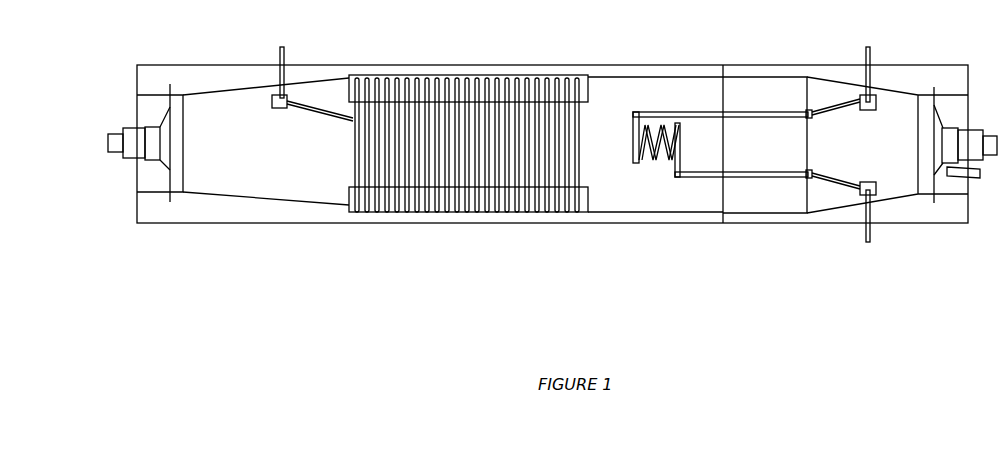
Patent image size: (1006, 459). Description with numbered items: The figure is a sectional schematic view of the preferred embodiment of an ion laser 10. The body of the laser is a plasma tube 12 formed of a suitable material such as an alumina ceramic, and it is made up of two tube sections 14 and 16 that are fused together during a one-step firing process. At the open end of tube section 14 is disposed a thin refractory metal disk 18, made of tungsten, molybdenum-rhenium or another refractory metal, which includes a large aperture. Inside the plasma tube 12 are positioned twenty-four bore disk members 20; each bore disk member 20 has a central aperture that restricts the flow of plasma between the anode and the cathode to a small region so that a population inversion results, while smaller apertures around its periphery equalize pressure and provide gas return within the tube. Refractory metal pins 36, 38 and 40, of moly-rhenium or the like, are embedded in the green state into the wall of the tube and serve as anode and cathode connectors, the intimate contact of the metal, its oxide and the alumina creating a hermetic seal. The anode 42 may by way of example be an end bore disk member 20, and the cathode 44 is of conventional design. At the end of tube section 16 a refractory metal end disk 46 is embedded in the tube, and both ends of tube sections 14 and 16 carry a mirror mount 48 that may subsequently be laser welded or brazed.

The ion laser 10 is at (503, 250).
The plasma tube 12 is at (338, 210).
The tube section 14 is at (633, 216).
The tube section 16 is at (763, 216).
The refractory metal disk 18 is at (175, 108).
The bore disk member 20 is at (380, 213).
The refractory metal pin 36 is at (275, 54).
The refractory metal pin 38 is at (863, 53).
The refractory metal pin 40 is at (868, 244).
The anode 42 is at (352, 156).
The cathode 44 is at (642, 164).
The end disk 46 is at (928, 110).
The mirror mount 48 is at (153, 160).